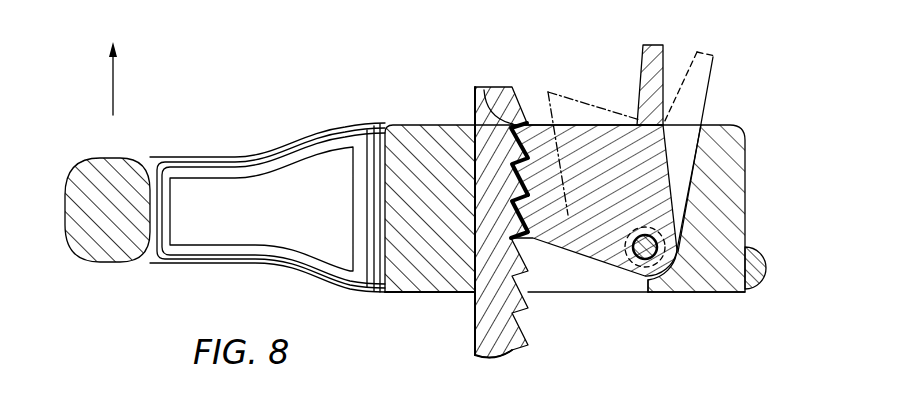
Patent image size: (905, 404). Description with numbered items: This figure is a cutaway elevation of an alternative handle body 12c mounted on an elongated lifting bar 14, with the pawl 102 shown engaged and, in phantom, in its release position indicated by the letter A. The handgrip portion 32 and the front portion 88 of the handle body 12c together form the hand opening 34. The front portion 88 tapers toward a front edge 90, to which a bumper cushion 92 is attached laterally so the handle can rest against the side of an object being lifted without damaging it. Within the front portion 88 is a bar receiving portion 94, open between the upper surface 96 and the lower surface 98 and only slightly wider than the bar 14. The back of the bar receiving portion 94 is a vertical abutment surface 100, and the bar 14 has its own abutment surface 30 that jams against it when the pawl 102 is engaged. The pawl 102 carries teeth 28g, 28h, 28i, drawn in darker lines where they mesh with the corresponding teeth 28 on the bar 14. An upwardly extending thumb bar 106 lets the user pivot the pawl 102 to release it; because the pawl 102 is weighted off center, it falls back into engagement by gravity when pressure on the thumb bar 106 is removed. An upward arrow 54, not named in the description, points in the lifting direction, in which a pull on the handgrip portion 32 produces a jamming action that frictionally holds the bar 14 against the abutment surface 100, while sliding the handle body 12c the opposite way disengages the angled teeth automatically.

The direction arrow 54 is at (113, 82).
The handgrip portion 32 is at (98, 160).
The handle body 12c is at (198, 271).
The hand opening 34 is at (261, 209).
The front portion 88 is at (385, 122).
The upper surface 96 is at (437, 123).
The abutment surface 100 is at (435, 293).
The teeth 28 is at (527, 334).
The tooth 28g is at (480, 84).
The tooth 28h is at (477, 183).
The tooth 28i is at (500, 216).
The abutment surface 30 is at (475, 313).
The bar 14 is at (477, 340).
The pawl 102 is at (594, 200).
The thumb bar 106 is at (640, 72).
The phantom position A is at (712, 82).
The front edge 90 is at (738, 133).
The lower surface 98 is at (702, 295).
The bar receiving portion 94 is at (603, 283).
The bumper cushion 92 is at (762, 286).